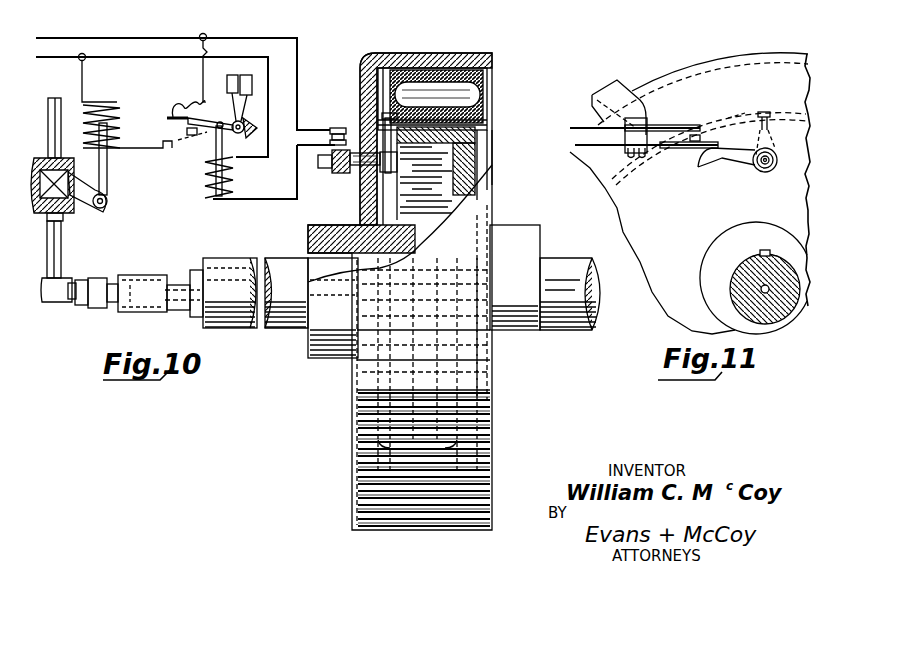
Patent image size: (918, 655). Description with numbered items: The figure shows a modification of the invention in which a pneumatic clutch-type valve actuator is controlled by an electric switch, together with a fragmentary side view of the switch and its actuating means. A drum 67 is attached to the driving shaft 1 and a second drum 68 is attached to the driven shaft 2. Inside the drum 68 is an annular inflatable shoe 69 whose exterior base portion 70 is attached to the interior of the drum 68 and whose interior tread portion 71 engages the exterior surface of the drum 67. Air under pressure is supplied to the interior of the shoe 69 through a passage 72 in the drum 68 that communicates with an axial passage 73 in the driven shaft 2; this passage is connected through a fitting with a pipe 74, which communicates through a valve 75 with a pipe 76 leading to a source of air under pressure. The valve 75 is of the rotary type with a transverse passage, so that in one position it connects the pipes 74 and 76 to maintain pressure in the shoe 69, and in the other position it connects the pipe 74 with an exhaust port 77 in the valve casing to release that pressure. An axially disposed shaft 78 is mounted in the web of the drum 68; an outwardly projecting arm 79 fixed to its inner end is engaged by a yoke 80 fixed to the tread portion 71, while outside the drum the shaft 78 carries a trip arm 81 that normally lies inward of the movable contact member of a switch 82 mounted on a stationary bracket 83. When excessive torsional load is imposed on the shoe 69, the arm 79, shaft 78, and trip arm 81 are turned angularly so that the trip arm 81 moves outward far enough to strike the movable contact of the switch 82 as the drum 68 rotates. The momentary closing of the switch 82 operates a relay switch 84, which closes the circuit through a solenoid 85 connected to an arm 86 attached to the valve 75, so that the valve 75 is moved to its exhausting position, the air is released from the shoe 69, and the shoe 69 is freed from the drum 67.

In FIG. 10, the driving shaft 1 is at (560, 258).
In FIG. 10, the driven shaft 2 is at (285, 332).
In FIG. 11, the driven shaft 2 is at (738, 272).
In FIG. 10, the drum 67 is at (492, 165).
In FIG. 10, the drum 68 is at (425, 53).
In FIG. 11, the drum 68 is at (735, 55).
In FIG. 10, the annular inflatable shoe 69 is at (492, 92).
In FIG. 10, the exterior base portion 70 is at (455, 64).
In FIG. 10, the interior tread portion 71 is at (470, 121).
In FIG. 11, the interior tread portion 71 is at (735, 116).
In FIG. 10, the passage 72 is at (352, 446).
In FIG. 10, the axial passage 73 is at (272, 284).
In FIG. 11, the axial passage 73 is at (762, 294).
In FIG. 10, the pipe 74 is at (62, 262).
In FIG. 10, the valve 75 is at (42, 162).
In FIG. 10, the pipe 76 is at (50, 103).
In FIG. 10, the exhaust port 77 is at (78, 212).
In FIG. 10, the axially disposed shaft 78 is at (368, 165).
In FIG. 11, the axially disposed shaft 78 is at (762, 172).
In FIG. 10, the outwardly projecting arm 79 is at (385, 130).
In FIG. 11, the outwardly projecting arm 79 is at (775, 138).
In FIG. 10, the yoke 80 is at (382, 116).
In FIG. 11, the yoke 80 is at (770, 112).
In FIG. 10, the trip arm 81 is at (330, 175).
In FIG. 11, the trip arm 81 is at (728, 163).
In FIG. 10, the switch 82 is at (346, 130).
In FIG. 11, the switch 82 is at (700, 152).
In FIG. 11, the stationary bracket 83 is at (637, 86).
In FIG. 10, the relay switch 84 is at (202, 135).
In FIG. 10, the solenoid 85 is at (118, 112).
In FIG. 10, the arm 86 is at (110, 200).